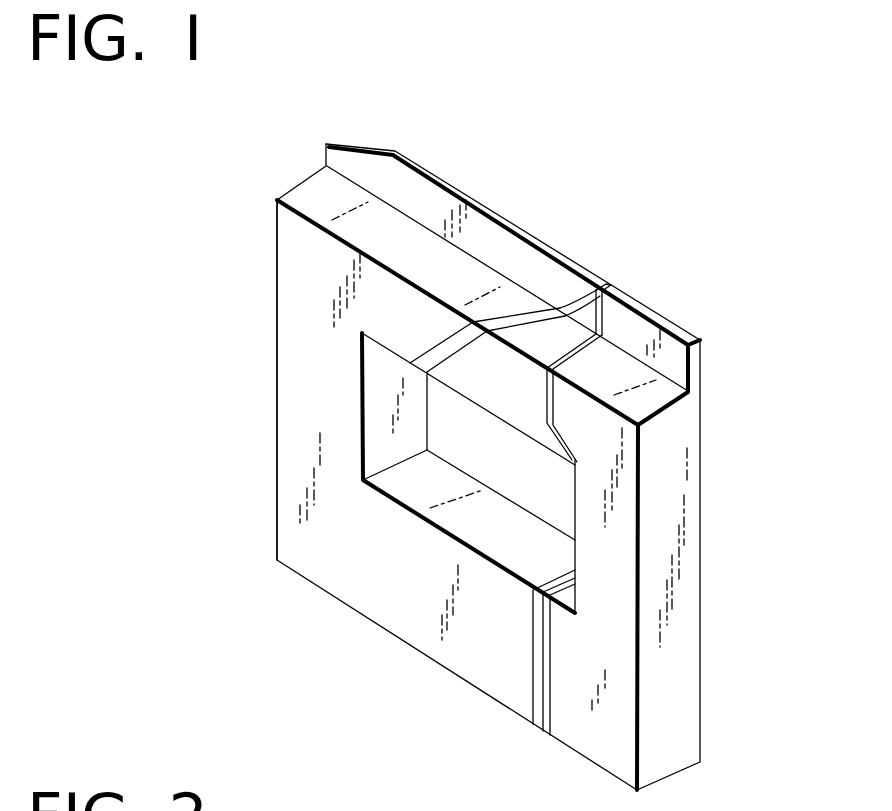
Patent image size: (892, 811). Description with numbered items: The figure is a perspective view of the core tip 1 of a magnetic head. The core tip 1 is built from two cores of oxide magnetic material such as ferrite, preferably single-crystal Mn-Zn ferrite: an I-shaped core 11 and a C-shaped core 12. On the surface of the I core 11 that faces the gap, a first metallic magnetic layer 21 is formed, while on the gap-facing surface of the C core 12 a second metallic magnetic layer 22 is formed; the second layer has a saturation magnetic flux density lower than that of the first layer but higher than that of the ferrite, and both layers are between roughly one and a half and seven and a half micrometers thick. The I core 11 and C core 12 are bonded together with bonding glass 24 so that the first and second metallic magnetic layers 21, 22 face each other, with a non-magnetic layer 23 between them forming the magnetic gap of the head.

The core tip 1 is at (684, 771).
The I-shaped core 11 is at (677, 525).
The C-shaped core 12 is at (315, 422).
The first metallic magnetic layer 21 is at (607, 285).
The second metallic magnetic layer 22 is at (592, 293).
The non-magnetic layer 23 is at (596, 297).
The bonding glass 24 is at (503, 368).